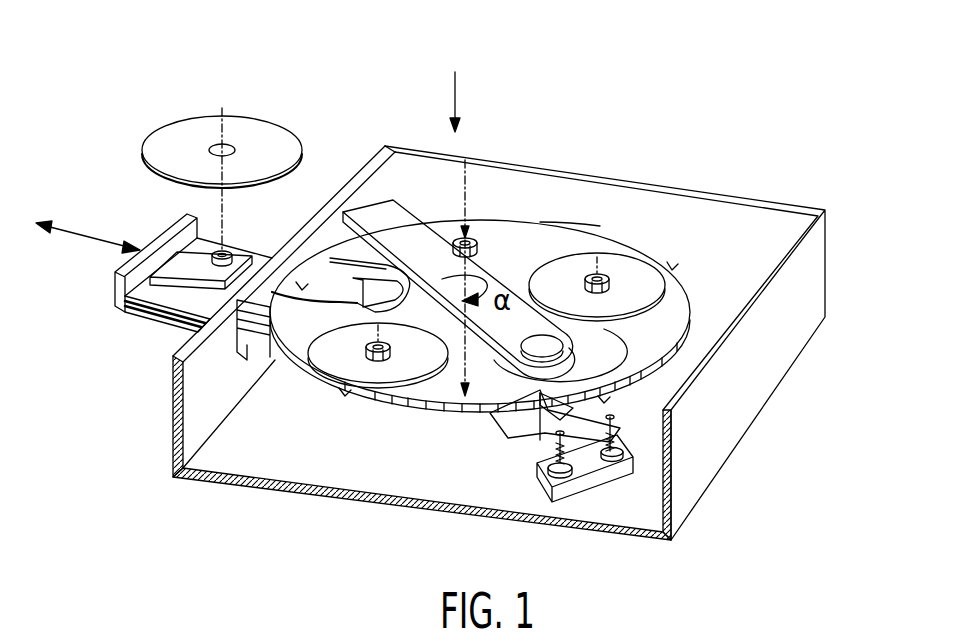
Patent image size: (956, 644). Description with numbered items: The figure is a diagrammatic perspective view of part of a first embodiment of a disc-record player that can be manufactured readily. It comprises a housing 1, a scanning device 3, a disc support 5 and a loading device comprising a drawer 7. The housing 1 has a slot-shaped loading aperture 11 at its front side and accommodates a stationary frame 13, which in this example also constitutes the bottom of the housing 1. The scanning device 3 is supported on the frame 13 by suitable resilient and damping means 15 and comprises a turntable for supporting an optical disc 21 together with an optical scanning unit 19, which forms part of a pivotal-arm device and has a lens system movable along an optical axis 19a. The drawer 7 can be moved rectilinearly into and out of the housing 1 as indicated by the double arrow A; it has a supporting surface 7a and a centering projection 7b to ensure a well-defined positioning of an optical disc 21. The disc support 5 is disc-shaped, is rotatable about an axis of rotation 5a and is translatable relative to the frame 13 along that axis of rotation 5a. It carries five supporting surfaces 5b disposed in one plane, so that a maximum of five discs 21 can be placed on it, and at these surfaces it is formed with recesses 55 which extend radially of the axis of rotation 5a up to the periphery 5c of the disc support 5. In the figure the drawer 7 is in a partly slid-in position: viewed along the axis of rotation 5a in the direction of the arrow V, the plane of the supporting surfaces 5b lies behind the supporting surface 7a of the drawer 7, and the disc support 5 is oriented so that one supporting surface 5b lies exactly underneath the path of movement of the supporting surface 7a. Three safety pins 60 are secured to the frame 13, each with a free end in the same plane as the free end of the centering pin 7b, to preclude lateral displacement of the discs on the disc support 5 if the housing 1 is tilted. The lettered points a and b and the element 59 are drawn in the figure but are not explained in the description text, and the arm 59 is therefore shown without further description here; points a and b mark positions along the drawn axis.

The housing 1 is at (812, 264).
The scanning device 3 is at (605, 412).
The disc support 5 is at (583, 240).
The axis of rotation 5a is at (467, 178).
The supporting surfaces 5b is at (340, 257).
The periphery 5c is at (567, 238).
The drawer 7 is at (117, 298).
The supporting surface 7a is at (173, 258).
The centering projection 7b is at (227, 250).
The loading aperture 11 is at (247, 343).
The frame 13 is at (590, 487).
The resilient and damping means 15 is at (550, 462).
The optical scanning unit 19 is at (537, 440).
The optical axis 19a is at (557, 378).
The optical disc 21 is at (197, 127).
The recesses 55 is at (300, 283).
The arm 59 is at (403, 228).
The safety pins 60 is at (473, 235).
The double arrow A is at (88, 232).
The arrow V is at (469, 102).
The point a on pivot axis a is at (488, 242).
The point b on pivot axis b is at (450, 390).